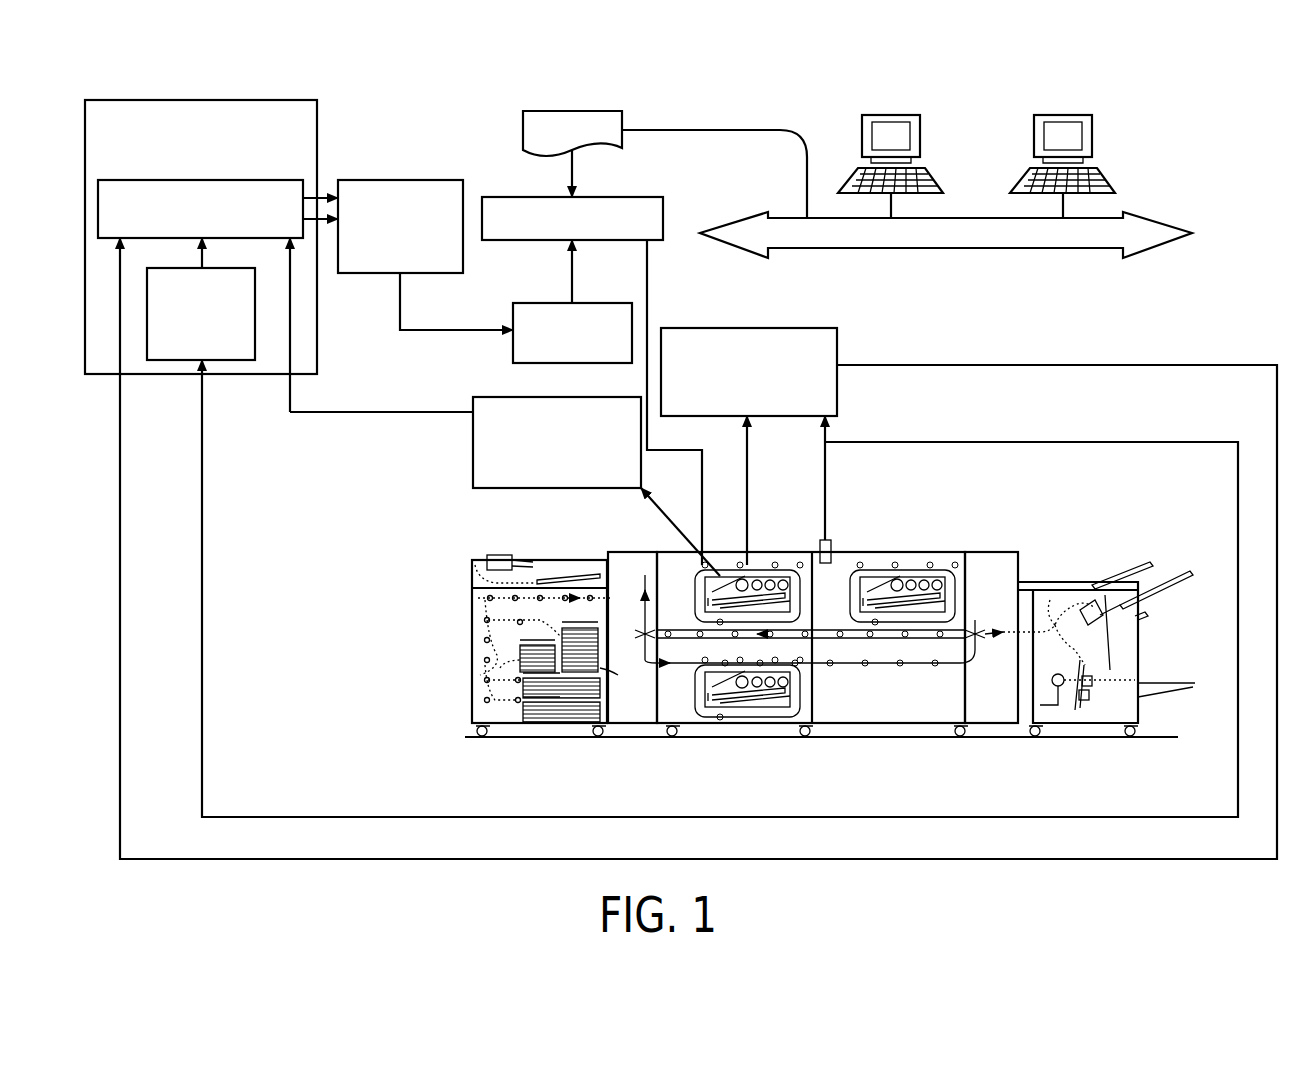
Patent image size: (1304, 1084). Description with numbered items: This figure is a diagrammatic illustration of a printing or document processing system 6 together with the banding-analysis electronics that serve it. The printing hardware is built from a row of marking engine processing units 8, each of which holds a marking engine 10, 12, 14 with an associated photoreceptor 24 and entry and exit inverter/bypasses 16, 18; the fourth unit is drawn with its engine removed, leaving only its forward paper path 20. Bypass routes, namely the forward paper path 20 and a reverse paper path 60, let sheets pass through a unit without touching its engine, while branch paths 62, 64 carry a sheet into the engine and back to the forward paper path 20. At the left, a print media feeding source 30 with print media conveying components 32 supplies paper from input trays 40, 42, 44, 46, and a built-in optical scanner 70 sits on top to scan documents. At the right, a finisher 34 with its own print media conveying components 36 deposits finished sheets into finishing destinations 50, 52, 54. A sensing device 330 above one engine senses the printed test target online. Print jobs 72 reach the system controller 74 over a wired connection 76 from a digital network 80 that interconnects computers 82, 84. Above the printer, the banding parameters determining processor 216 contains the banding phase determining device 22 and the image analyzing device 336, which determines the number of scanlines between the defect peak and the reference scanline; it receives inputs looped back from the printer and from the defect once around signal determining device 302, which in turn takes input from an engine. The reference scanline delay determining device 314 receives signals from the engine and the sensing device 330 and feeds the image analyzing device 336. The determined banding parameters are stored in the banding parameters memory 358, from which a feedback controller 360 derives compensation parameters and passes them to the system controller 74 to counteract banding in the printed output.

The printing system 6 is at (1132, 516).
The marking engine processing units 8 is at (860, 754).
The first marking engine 10 is at (758, 570).
The second marking engine 12 is at (922, 565).
The third marking engine 14 is at (750, 703).
The entry inverter/bypass 16 is at (700, 590).
The exit inverter/bypass 18 is at (796, 590).
The forward paper path 20 is at (888, 572).
The banding phase determining device 22 is at (98, 213).
The photoreceptor 24 is at (785, 572).
The print media feeding source 30 is at (541, 642).
The print media conveying components 32 is at (478, 598).
The finisher 34 is at (1135, 620).
The print media conveying components 36 is at (1058, 592).
The input tray 40 is at (520, 662).
The input tray 42 is at (543, 723).
The input tray 44 is at (578, 700).
The input tray 46 is at (618, 675).
The print media finishing destination 50 is at (1108, 562).
The print media finishing destination 52 is at (1167, 580).
The print media finishing destination 54 is at (1182, 683).
The reverse paper path 60 is at (920, 640).
The branch path 62 is at (650, 566).
The branch path 64 is at (645, 625).
The optical scanner 70 is at (530, 560).
The print job 72 is at (622, 138).
The system controller 74 is at (504, 197).
The wired connection 76 is at (722, 133).
The digital network 80 is at (985, 218).
The computer 82 is at (893, 115).
The computer 84 is at (1065, 115).
The banding parameters determining processor 216 is at (85, 143).
The defect once around signal determining device 302 is at (473, 446).
The reference scanline delay determining device 314 is at (760, 328).
The sensing device 330 is at (832, 540).
The image analyzing device 336 is at (226, 362).
The banding parameters memory 358 is at (366, 180).
The feedback controller 360 is at (612, 303).